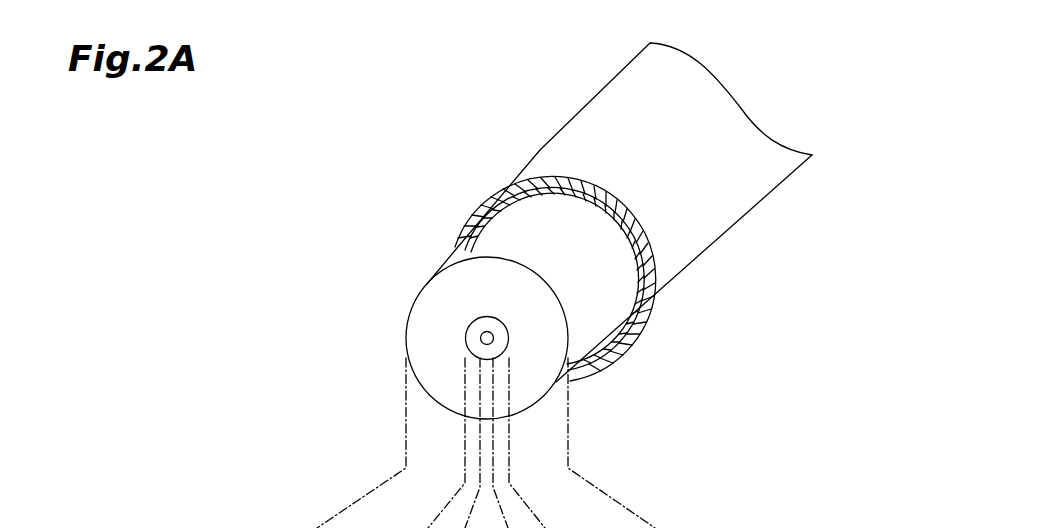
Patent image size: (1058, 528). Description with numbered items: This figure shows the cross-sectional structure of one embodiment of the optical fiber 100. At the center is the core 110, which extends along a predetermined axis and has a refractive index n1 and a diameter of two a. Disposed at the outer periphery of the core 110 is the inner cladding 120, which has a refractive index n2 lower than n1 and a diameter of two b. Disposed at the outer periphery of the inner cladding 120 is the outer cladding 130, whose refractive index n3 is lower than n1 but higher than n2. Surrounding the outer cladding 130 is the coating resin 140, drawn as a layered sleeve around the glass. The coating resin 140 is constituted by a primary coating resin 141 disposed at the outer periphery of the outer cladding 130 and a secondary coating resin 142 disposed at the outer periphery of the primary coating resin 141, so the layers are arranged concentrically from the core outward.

The optical fiber 100 is at (517, 107).
The core 110 is at (480, 338).
The inner cladding 120 is at (478, 318).
The outer cladding 130 is at (446, 284).
The coating resin 140 is at (505, 266).
The primary coating resin 141 is at (543, 192).
The secondary coating resin 142 is at (538, 186).